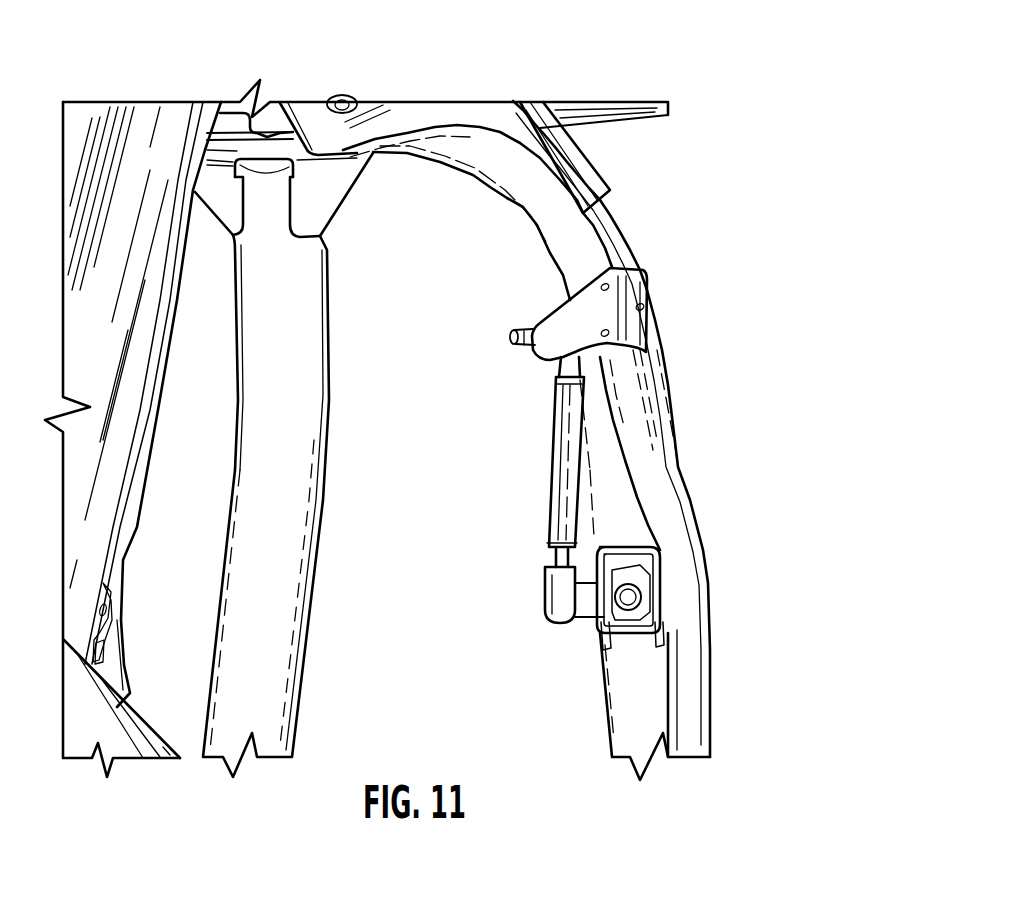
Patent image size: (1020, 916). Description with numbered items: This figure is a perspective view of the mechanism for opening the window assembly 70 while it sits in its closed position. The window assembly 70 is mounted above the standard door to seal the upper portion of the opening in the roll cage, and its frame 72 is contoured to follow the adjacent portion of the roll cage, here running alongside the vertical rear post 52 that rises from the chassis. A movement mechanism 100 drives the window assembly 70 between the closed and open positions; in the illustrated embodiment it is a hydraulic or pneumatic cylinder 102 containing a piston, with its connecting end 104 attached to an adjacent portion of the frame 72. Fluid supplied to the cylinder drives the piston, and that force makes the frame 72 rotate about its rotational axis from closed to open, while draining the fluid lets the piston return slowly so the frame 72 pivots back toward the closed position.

The rear post 52 is at (610, 241).
The window assembly 70 is at (742, 87).
The frame 72 is at (457, 112).
The gas spring assembly 100 is at (632, 459).
The gas spring cylinder 102 is at (558, 442).
The ball socket end 104 is at (543, 563).